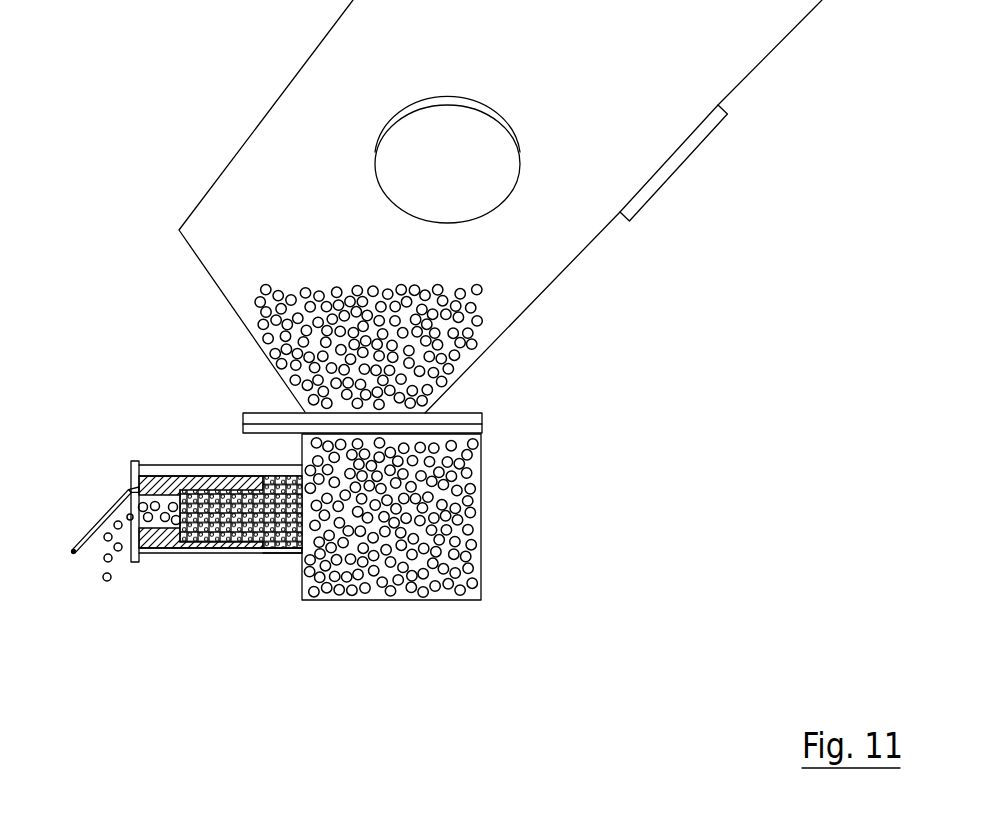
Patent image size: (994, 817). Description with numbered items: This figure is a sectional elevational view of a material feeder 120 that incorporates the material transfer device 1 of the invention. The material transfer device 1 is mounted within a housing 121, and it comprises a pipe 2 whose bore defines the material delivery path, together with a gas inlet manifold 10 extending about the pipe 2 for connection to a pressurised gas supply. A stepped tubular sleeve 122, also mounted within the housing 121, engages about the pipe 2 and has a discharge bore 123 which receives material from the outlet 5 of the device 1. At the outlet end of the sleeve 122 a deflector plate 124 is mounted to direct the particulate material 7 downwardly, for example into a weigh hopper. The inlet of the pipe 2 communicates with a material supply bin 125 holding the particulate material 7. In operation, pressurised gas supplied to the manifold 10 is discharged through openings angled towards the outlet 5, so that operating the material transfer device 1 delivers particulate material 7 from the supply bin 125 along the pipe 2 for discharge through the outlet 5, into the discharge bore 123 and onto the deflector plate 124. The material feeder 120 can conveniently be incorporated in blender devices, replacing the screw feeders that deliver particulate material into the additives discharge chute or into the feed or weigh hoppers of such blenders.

The material transfer device 1 is at (236, 548).
The pipe 2 is at (213, 540).
The outlet 5 is at (178, 491).
The particulate material 7 is at (468, 352).
The gas inlet manifold 10 is at (282, 554).
The material feeder 120 is at (402, 628).
The housing 121 is at (152, 560).
The stepped tubular sleeve 122 is at (213, 477).
The discharge bore 123 is at (128, 490).
The deflector plate 124 is at (86, 527).
The material supply bin 125 is at (503, 450).